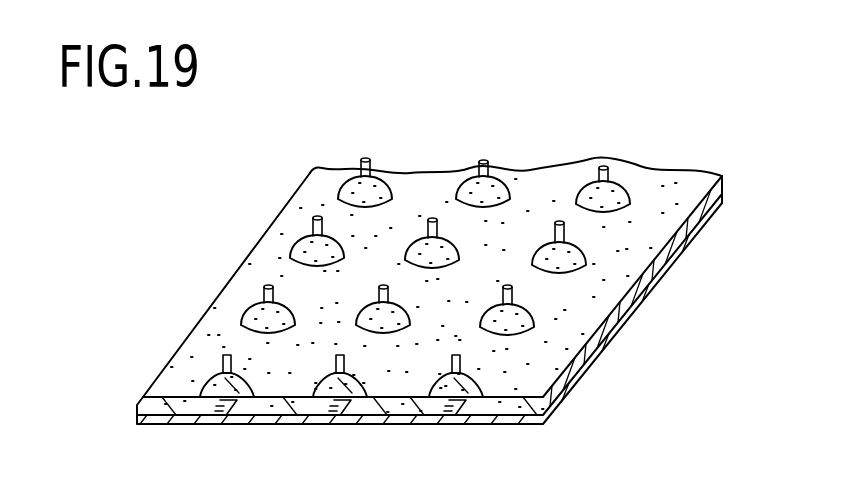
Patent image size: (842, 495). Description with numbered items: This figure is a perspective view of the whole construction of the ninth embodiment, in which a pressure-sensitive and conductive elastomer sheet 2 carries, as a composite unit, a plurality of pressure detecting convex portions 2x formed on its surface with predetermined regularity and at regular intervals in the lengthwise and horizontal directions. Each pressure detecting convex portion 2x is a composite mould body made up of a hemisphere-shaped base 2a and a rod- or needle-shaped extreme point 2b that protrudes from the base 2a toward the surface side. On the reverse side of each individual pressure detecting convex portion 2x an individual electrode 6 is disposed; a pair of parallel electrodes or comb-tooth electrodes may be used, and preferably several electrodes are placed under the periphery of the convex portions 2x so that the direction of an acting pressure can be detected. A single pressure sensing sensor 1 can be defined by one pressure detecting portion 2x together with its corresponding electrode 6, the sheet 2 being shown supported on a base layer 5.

The pressure sensing sensor 1 is at (732, 157).
The pressure-sensitive and conductive elastomer sheet 2 is at (587, 303).
The pressure detecting convex portion 2x is at (451, 106).
The hemisphere-shaped base 2a is at (383, 190).
The rod- or needle-shaped extreme point 2b is at (371, 168).
The base substrate 5 is at (608, 343).
The electrode 6 is at (221, 402).